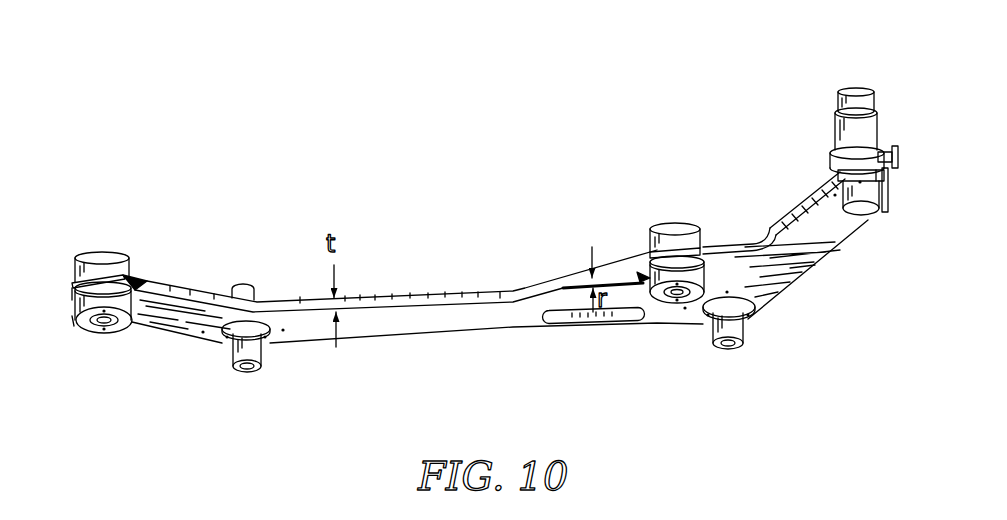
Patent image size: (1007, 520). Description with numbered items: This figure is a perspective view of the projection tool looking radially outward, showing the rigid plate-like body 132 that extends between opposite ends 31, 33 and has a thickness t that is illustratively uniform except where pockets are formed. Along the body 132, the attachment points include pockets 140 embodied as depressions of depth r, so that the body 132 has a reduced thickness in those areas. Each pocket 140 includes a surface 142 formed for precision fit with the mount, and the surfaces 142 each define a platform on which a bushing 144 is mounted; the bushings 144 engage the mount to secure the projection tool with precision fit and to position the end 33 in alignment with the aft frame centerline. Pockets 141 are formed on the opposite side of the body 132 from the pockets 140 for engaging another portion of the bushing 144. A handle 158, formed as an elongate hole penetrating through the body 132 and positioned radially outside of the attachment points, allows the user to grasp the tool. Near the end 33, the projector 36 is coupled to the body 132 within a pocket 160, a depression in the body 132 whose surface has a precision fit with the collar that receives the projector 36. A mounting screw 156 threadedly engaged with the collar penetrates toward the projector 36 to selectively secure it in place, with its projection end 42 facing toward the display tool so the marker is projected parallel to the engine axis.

The end 31 is at (65, 327).
The end 33 is at (898, 208).
The projector 36 is at (880, 128).
The projection end 42 is at (868, 222).
The body 132 is at (480, 317).
The pockets 140 is at (158, 272).
The pockets 141 is at (563, 280).
The surface 142 is at (133, 278).
The bushing 144 is at (72, 314).
The mounting screw 156 is at (898, 157).
The handle 158 is at (615, 327).
The pocket 160 is at (820, 183).